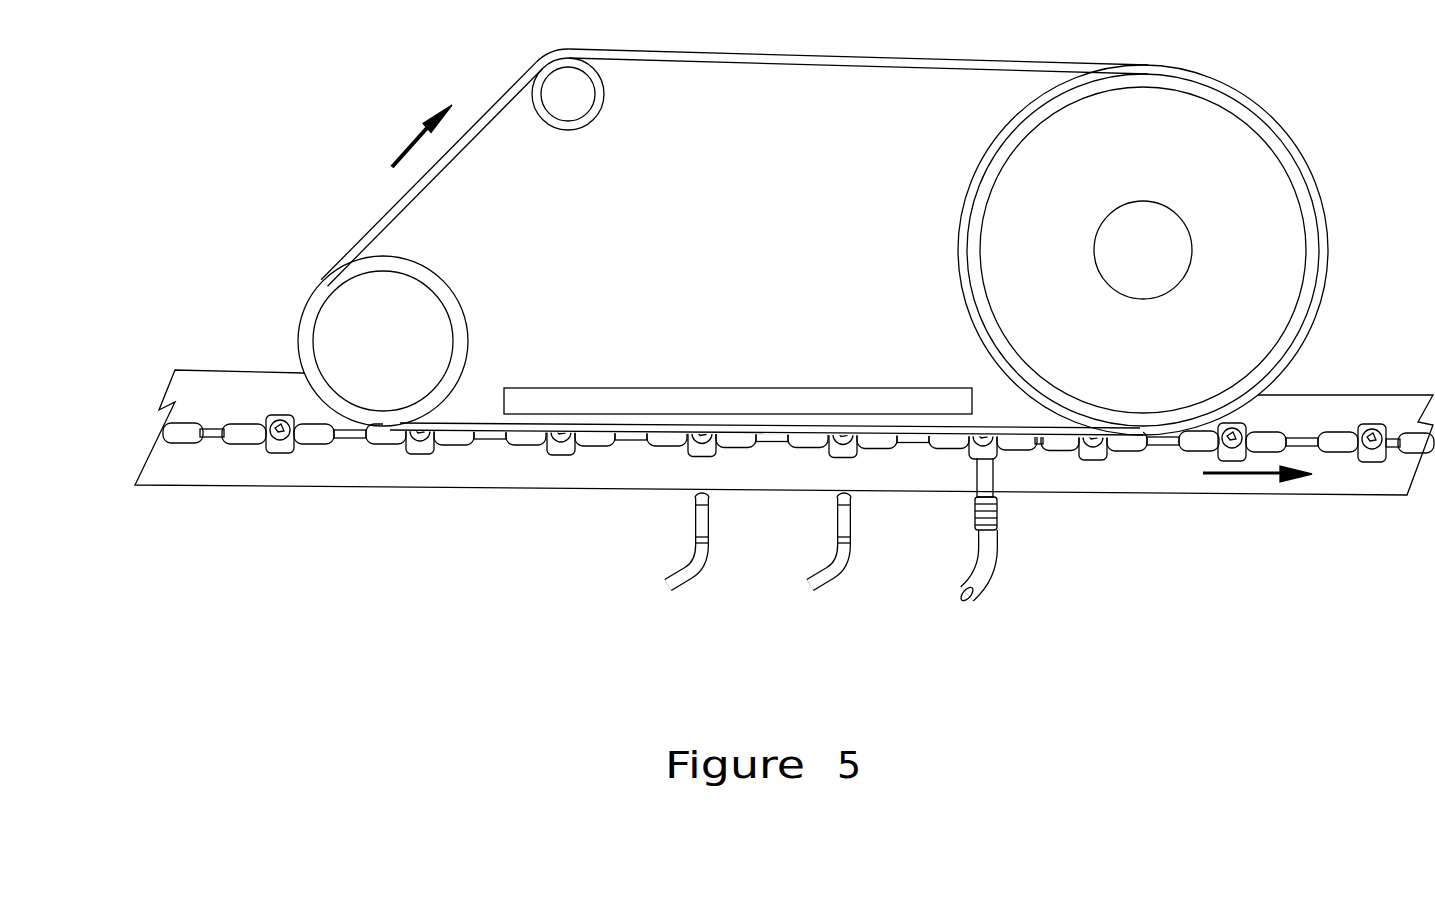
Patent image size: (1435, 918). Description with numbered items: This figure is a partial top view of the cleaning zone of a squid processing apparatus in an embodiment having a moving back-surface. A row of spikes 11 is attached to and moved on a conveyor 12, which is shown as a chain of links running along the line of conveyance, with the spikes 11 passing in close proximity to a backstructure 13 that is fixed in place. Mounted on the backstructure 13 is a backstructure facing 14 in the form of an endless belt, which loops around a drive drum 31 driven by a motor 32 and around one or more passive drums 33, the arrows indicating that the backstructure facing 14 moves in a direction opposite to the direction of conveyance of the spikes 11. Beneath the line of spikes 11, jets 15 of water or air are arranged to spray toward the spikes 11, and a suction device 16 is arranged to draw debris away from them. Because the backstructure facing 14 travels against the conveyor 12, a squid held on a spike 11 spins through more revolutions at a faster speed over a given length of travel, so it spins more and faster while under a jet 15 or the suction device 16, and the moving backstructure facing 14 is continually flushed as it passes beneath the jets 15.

The spikes 11 is at (270, 448).
The conveyor 12 is at (217, 440).
The backstructure 13 is at (683, 403).
The backstructure facing 14 is at (772, 53).
The jets 15 is at (820, 575).
The suction device 16 is at (988, 568).
The drive drum 31 is at (1156, 158).
The motor 32 is at (1158, 262).
The passive drums 33 is at (549, 126).